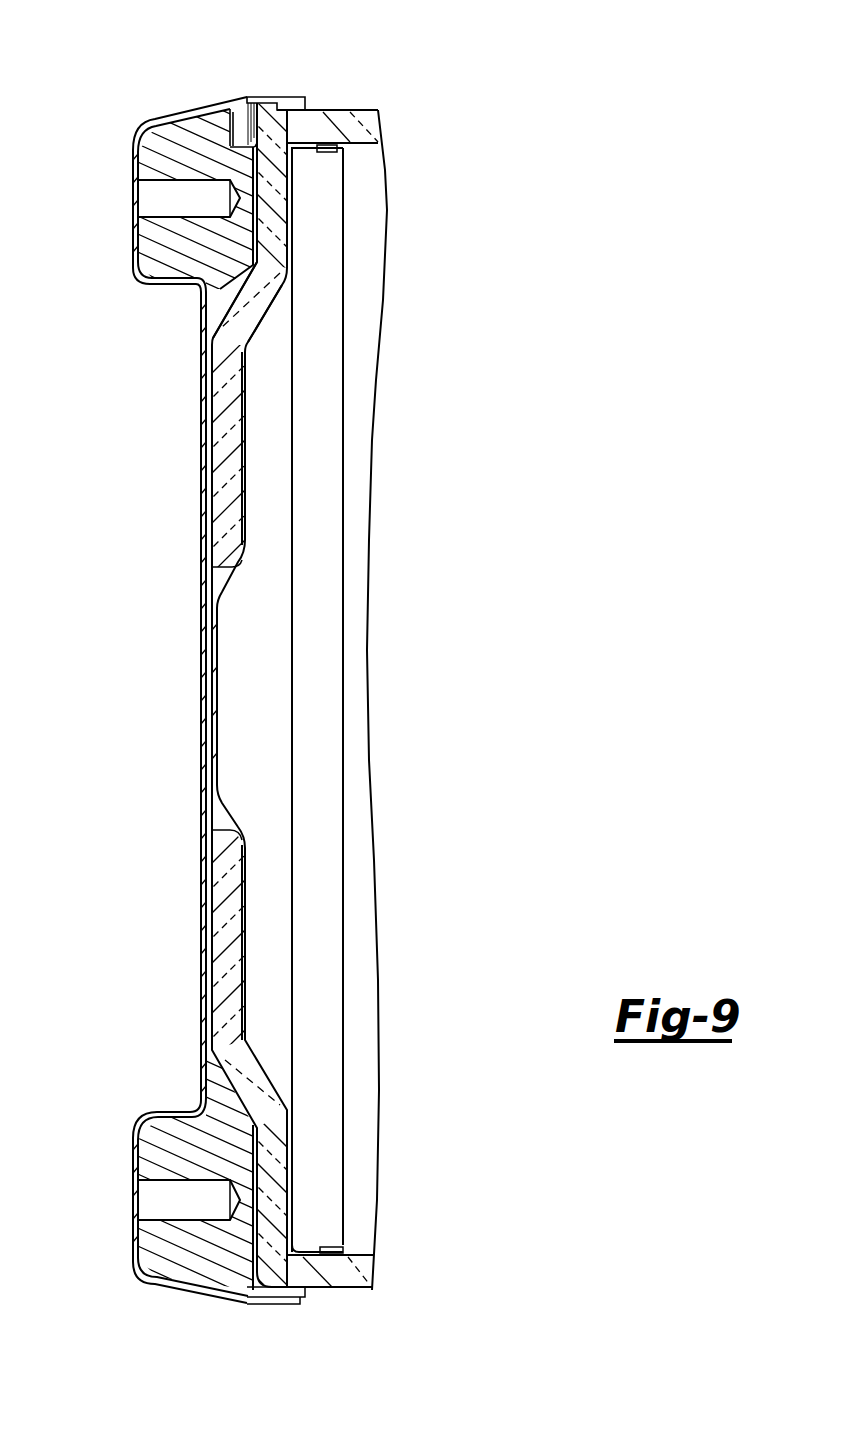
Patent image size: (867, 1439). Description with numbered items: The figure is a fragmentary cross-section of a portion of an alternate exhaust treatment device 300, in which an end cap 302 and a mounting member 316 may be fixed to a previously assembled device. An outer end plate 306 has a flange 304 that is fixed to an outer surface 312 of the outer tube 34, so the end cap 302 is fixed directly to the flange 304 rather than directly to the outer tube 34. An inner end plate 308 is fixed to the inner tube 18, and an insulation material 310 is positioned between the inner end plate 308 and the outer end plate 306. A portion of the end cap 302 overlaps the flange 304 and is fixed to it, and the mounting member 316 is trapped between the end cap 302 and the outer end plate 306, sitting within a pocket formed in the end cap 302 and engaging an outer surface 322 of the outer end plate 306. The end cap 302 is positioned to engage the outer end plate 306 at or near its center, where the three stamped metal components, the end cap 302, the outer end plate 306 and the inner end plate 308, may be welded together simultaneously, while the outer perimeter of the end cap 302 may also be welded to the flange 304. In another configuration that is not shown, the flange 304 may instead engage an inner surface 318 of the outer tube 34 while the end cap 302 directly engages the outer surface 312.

The exhaust treatment device 300 is at (442, 146).
The end cap 302 is at (132, 156).
The flange 304 is at (283, 100).
The outer end plate 306 is at (258, 258).
The inner end plate 308 is at (264, 327).
The insulation material 310 is at (224, 520).
The outer surface 312 is at (321, 145).
The mounting member 316 is at (146, 243).
The inner surface 318 is at (329, 112).
The outer surface 322 is at (231, 145).
The outer tube 34 is at (380, 110).
The inner tube 18 is at (354, 147).